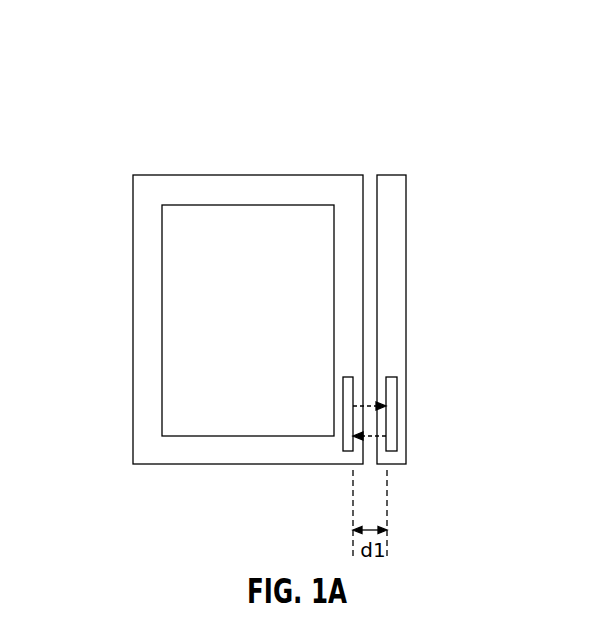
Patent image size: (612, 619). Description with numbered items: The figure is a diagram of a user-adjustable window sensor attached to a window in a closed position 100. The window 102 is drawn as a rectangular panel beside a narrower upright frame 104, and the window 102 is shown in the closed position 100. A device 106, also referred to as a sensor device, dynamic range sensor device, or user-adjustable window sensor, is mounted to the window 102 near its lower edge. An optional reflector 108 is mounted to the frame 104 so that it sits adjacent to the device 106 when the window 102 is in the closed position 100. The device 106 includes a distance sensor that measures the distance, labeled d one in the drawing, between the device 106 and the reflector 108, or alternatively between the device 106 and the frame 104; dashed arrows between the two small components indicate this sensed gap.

The closed position 100 is at (276, 66).
The window 102 is at (156, 168).
The frame 104 is at (397, 168).
The device 106 is at (347, 452).
The reflector 108 is at (392, 452).